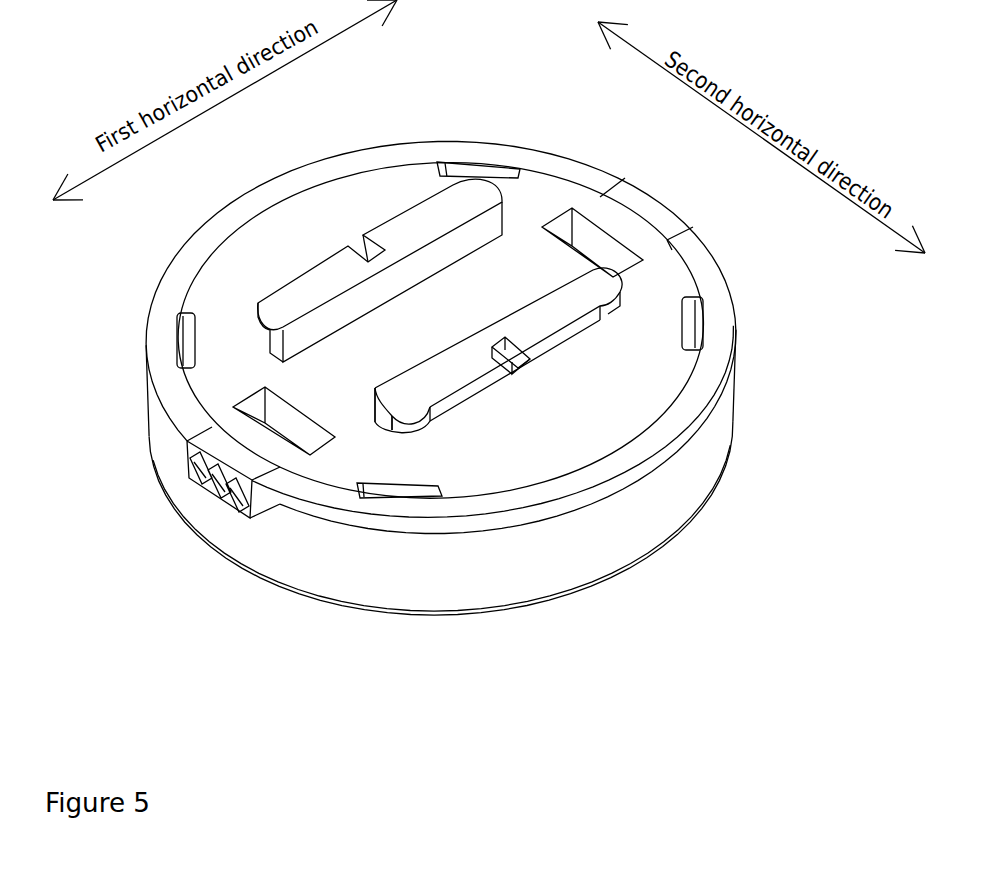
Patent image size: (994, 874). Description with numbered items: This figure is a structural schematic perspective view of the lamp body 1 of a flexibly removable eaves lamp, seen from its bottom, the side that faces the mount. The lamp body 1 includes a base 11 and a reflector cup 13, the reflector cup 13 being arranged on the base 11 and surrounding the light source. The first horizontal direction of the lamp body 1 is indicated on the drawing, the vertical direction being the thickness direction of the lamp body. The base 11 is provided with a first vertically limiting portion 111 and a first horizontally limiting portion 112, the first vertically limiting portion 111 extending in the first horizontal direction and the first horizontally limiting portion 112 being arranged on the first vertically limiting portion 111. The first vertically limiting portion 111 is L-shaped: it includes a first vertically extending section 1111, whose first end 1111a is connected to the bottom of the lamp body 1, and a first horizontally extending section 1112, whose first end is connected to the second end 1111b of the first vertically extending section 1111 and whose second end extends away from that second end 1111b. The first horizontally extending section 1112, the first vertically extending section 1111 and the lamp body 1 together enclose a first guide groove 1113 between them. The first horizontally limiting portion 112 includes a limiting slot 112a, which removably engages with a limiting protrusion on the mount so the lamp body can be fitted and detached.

The lamp body 1 is at (508, 412).
The base 11 is at (441, 340).
The reflector cup 13 is at (447, 150).
The first vertically limiting portion 111 is at (483, 513).
The first vertically extending section 1111 is at (371, 531).
The first end 1111a is at (383, 423).
The second end 1111b is at (385, 405).
The first horizontally extending section 1112 is at (453, 383).
The first guide groove 1113 is at (520, 373).
The first horizontally limiting portion 112 is at (681, 456).
The limiting slot 112a is at (500, 342).